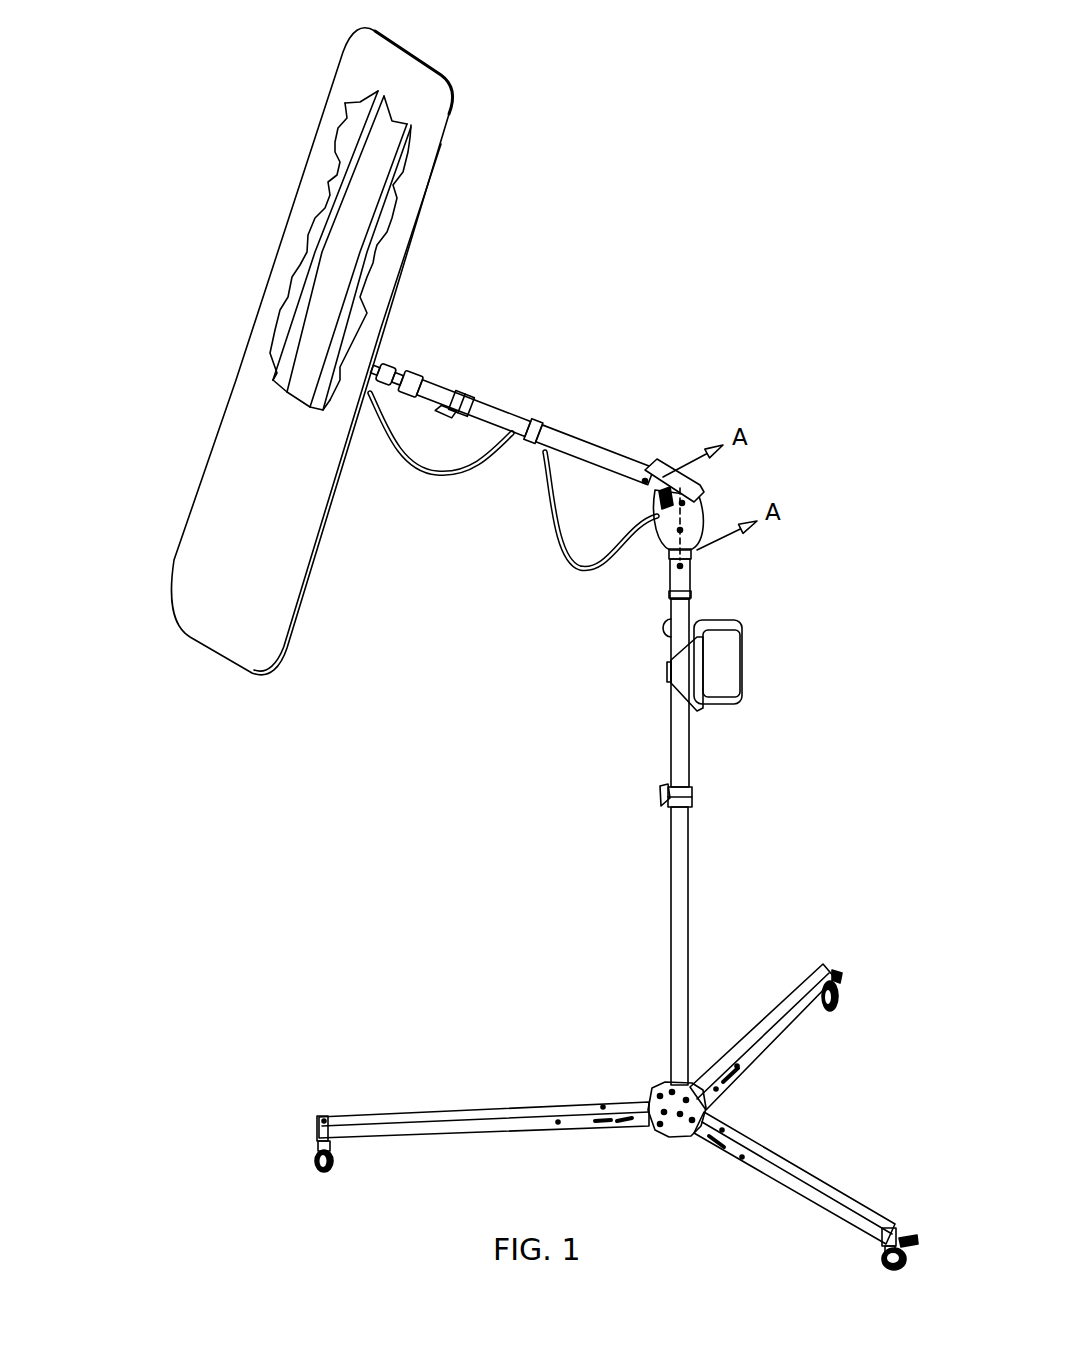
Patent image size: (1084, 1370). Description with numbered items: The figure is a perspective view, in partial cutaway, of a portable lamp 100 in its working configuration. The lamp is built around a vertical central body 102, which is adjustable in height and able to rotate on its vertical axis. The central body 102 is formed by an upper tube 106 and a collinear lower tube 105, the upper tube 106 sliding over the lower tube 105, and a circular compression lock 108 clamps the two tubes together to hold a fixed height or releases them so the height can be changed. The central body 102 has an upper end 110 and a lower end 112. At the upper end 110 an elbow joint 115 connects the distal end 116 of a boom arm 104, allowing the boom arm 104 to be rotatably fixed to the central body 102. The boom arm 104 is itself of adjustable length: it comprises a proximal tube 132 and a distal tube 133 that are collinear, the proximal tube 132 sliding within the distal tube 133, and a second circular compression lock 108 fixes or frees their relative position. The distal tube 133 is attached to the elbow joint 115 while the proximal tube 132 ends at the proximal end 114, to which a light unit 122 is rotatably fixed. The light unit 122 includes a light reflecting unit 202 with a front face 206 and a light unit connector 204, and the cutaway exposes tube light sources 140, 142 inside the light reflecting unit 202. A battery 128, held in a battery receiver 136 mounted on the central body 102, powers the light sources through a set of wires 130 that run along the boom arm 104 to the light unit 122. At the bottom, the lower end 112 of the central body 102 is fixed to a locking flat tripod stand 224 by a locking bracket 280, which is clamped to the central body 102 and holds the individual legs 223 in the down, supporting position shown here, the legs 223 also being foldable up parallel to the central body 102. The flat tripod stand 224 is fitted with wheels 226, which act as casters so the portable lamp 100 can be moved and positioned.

The portable lamp 100 is at (718, 220).
The central body 102 is at (566, 914).
The boom arm 104 is at (521, 386).
The lower tube 105 is at (675, 853).
The upper tube 106 is at (678, 747).
The circular compression lock 108 is at (452, 424).
The upper end 110 is at (672, 568).
The lower end 112 is at (667, 1082).
The proximal end 114 is at (403, 366).
The elbow joint 115 is at (694, 439).
The distal end 116 is at (643, 470).
The light unit 122 is at (283, 383).
The battery 128 is at (718, 673).
The set of wires 130 is at (560, 553).
The proximal tube 132 is at (512, 406).
The distal tube 133 is at (585, 450).
The battery receiver 136 is at (697, 709).
The tube light source 140 is at (345, 124).
The tube light source 142 is at (385, 181).
The light reflecting unit 202 is at (296, 620).
The light unit connector 204 is at (400, 352).
The front face 206 is at (250, 662).
The legs 223 is at (377, 1117).
The flat tripod stand 224 is at (748, 1113).
The wheels 226 is at (315, 1162).
The locking bracket 280 is at (669, 1153).